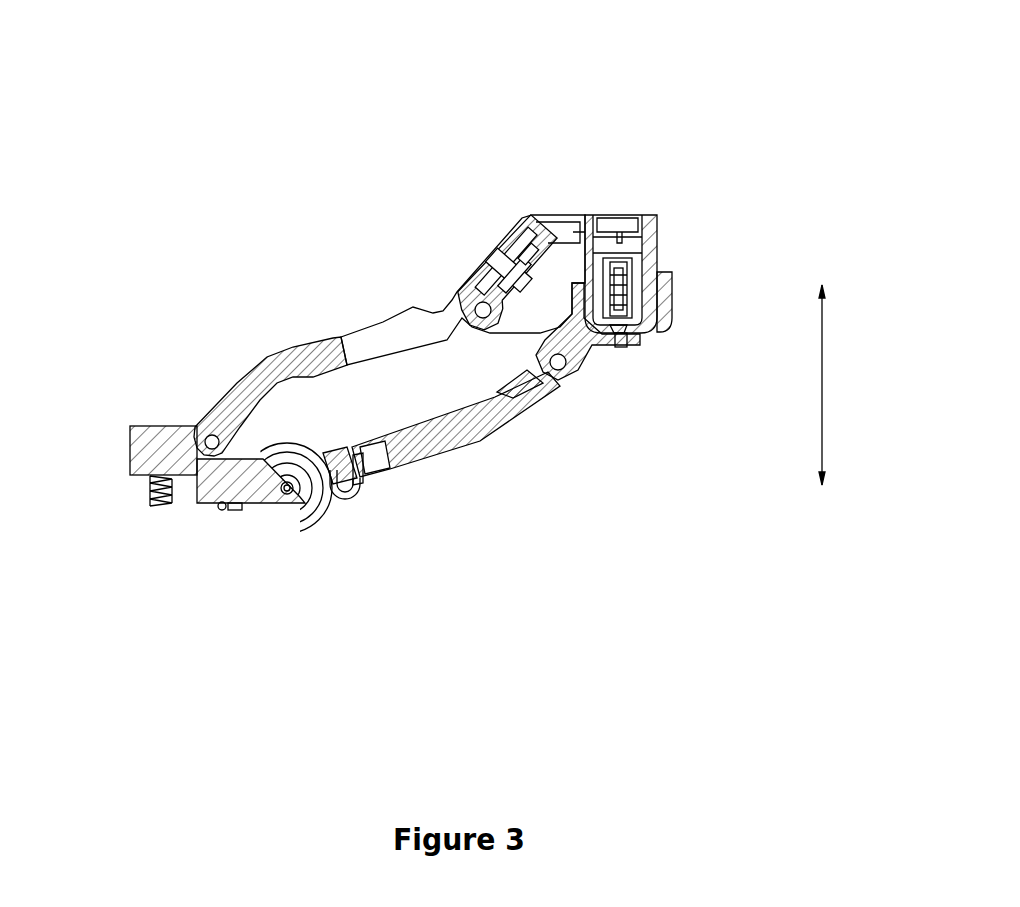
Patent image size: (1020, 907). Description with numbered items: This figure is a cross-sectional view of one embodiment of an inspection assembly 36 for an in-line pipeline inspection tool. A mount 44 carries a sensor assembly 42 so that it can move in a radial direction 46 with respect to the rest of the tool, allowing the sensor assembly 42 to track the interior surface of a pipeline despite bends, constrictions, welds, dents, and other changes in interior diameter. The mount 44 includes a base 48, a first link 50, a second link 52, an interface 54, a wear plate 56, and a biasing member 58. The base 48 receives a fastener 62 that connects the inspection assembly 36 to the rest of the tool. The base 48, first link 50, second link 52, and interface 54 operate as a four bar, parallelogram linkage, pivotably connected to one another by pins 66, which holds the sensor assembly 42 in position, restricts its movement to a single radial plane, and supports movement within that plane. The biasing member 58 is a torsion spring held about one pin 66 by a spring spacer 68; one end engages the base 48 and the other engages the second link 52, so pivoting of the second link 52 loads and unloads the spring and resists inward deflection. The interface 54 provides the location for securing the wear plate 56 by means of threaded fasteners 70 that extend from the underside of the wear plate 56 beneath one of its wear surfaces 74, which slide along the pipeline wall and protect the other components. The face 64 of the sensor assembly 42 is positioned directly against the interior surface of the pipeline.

The inspection assembly 36 is at (360, 85).
The sensor assembly 42 is at (638, 215).
The mount 44 is at (538, 437).
The radial direction 46 is at (822, 390).
The base 48 is at (155, 425).
The first link 50 is at (380, 320).
The second link 52 is at (373, 468).
The interface 54 is at (607, 350).
The wear plate 56 is at (503, 222).
The biasing member 58 is at (298, 545).
The fastener 62 is at (153, 493).
The face 64 is at (613, 222).
The pin 66 is at (476, 303).
The spring spacer 68 is at (305, 500).
The fastener 70 is at (485, 250).
The wear surface 74 is at (547, 220).